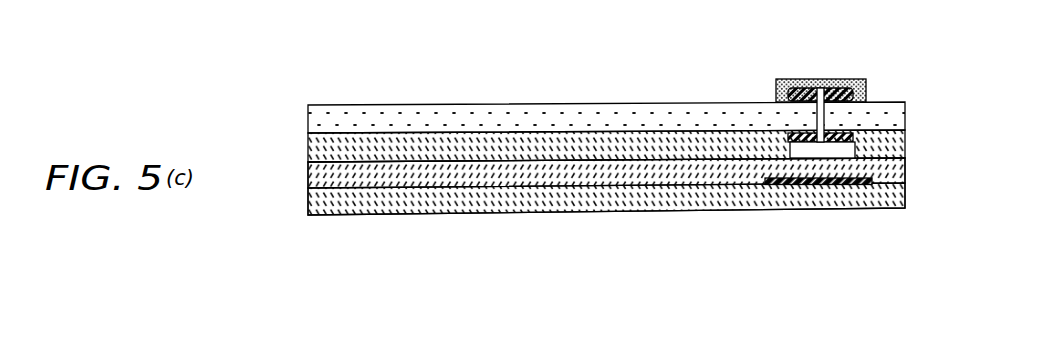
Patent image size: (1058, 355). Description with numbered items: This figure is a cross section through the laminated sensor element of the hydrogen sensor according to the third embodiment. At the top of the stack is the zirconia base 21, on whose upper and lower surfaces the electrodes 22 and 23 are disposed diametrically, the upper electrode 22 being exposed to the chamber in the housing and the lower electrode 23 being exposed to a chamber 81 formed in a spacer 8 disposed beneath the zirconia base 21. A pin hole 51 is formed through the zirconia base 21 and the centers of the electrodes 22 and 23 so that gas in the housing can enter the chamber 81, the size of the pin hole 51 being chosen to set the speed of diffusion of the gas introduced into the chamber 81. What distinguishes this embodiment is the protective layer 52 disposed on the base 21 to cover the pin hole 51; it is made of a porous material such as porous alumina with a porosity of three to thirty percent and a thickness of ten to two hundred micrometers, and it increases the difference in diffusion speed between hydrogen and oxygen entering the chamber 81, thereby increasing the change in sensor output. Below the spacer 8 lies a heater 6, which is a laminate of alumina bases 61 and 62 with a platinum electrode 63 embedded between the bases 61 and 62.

The heater 6 is at (655, 297).
The spacer 8 is at (880, 158).
The zirconia base 21 is at (400, 104).
The upper electrode 22 is at (800, 80).
The lower electrode 23 is at (812, 142).
The pin hole 51 is at (827, 88).
The protective layer 52 is at (783, 80).
The alumina base 61 is at (678, 168).
The alumina base 62 is at (722, 183).
The platinum electrode 63 is at (784, 184).
The chamber 81 is at (843, 152).